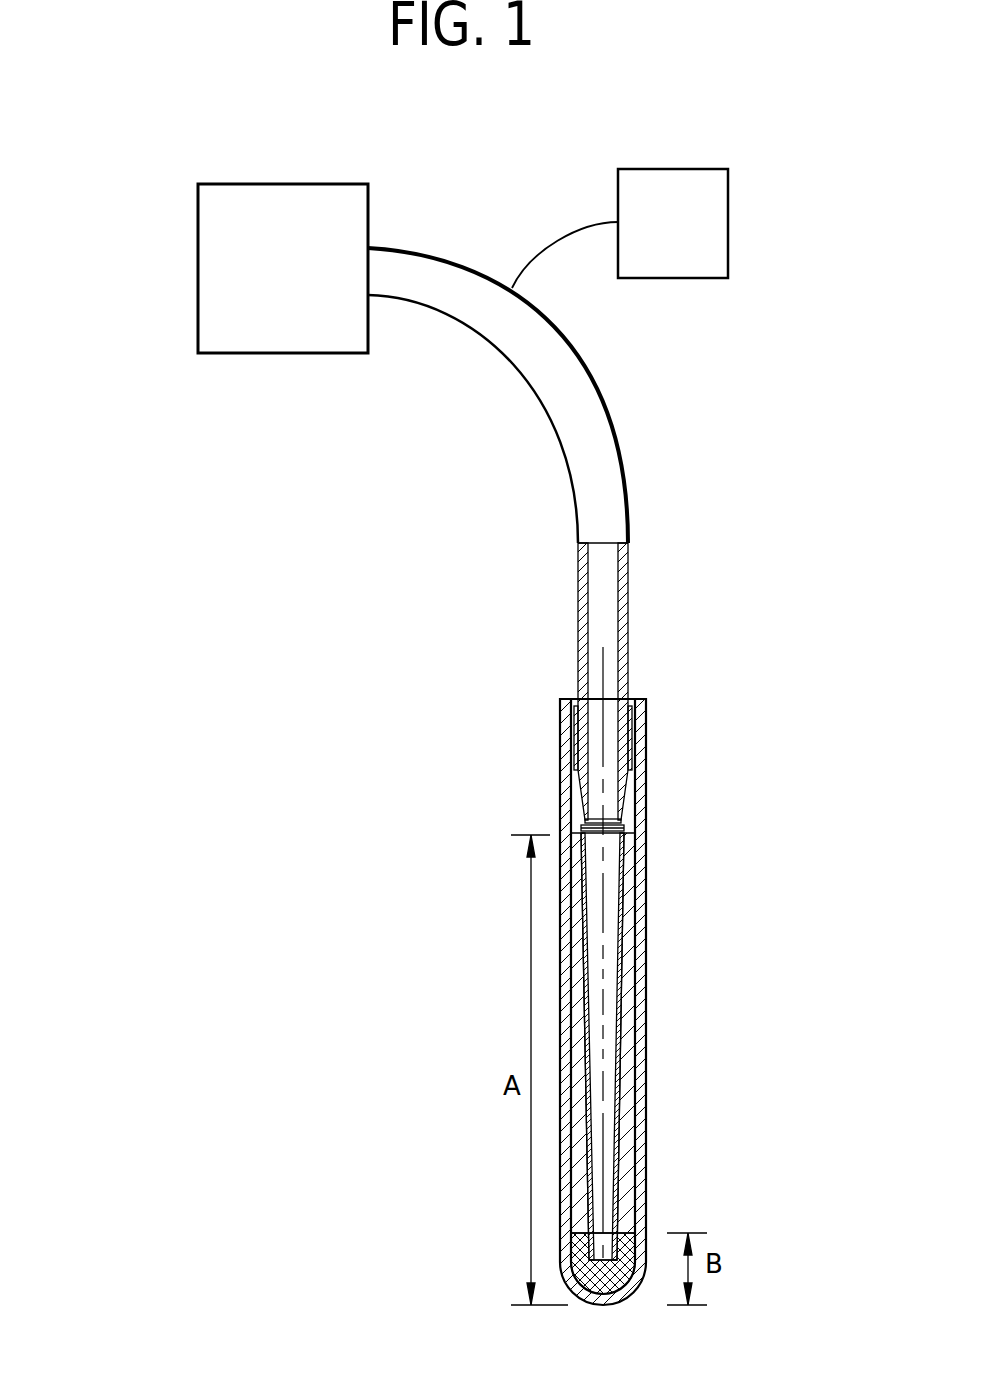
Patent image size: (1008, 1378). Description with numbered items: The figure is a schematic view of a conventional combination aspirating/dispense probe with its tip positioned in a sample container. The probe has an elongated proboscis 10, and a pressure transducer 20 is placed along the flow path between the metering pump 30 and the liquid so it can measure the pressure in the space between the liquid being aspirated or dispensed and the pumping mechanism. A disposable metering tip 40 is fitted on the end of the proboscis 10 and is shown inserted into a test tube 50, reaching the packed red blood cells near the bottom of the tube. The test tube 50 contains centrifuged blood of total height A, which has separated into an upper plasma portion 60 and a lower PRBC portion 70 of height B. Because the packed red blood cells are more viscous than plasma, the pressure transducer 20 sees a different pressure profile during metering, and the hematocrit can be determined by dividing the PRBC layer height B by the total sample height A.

The proboscis 10 is at (628, 590).
The pressure transducer 20 is at (728, 201).
The metering pump 30 is at (198, 237).
The disposable metering tip 40 is at (618, 982).
The test tube 50 is at (558, 998).
The plasma portion 60 is at (630, 1085).
The PRBC portion 70 is at (573, 1250).